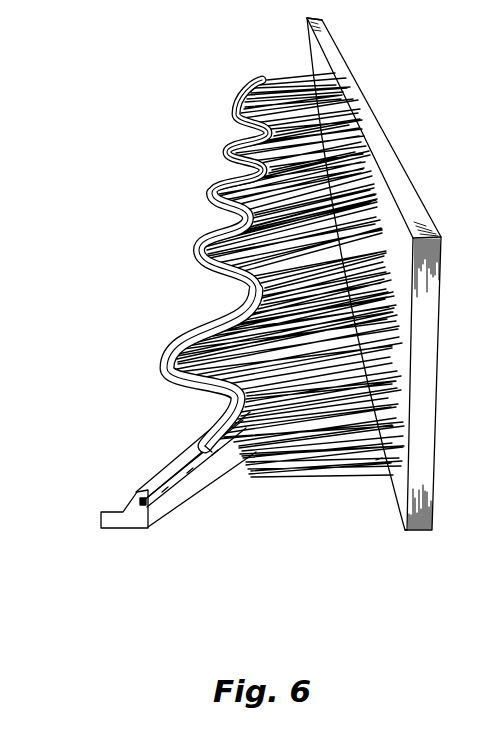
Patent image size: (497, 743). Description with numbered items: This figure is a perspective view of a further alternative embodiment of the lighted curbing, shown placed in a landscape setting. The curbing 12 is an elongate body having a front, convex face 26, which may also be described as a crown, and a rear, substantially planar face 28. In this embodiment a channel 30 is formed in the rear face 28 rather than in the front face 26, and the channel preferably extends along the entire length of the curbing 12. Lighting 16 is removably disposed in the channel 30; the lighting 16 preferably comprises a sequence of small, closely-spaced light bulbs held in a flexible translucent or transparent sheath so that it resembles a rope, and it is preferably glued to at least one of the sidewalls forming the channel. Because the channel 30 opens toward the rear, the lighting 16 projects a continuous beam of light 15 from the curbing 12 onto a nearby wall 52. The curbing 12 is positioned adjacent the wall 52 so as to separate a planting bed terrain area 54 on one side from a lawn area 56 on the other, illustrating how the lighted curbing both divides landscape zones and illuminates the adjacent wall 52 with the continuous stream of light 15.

The curbing 12 is at (98, 512).
The continuous beam of light 15 is at (345, 470).
The lighting 16 is at (205, 462).
The front, convex face 26 is at (123, 497).
The rear, substantially planar face 28 is at (158, 508).
The channel 30 is at (133, 510).
The wall 52 is at (383, 153).
The planting bed terrain area 54 is at (305, 490).
The lawn area 56 is at (102, 322).